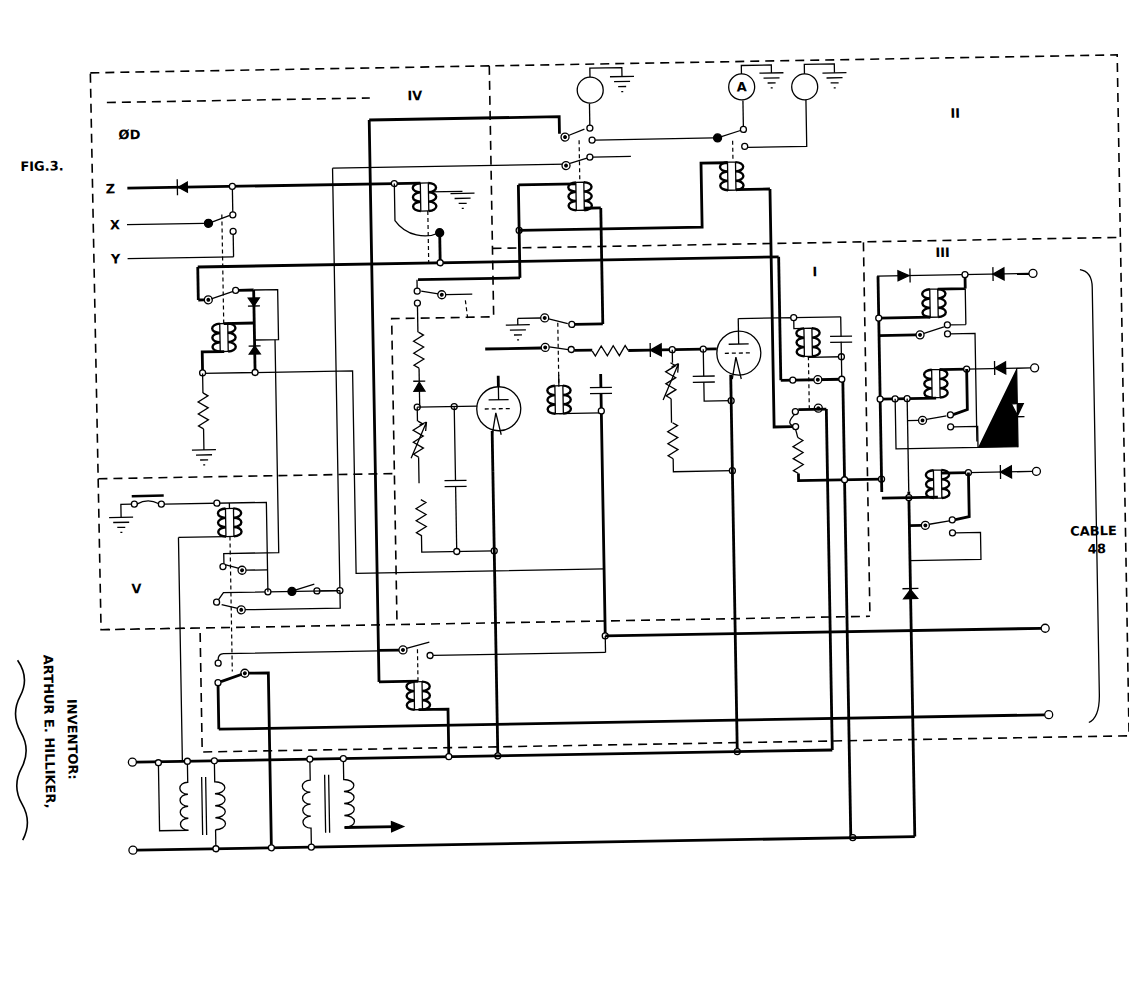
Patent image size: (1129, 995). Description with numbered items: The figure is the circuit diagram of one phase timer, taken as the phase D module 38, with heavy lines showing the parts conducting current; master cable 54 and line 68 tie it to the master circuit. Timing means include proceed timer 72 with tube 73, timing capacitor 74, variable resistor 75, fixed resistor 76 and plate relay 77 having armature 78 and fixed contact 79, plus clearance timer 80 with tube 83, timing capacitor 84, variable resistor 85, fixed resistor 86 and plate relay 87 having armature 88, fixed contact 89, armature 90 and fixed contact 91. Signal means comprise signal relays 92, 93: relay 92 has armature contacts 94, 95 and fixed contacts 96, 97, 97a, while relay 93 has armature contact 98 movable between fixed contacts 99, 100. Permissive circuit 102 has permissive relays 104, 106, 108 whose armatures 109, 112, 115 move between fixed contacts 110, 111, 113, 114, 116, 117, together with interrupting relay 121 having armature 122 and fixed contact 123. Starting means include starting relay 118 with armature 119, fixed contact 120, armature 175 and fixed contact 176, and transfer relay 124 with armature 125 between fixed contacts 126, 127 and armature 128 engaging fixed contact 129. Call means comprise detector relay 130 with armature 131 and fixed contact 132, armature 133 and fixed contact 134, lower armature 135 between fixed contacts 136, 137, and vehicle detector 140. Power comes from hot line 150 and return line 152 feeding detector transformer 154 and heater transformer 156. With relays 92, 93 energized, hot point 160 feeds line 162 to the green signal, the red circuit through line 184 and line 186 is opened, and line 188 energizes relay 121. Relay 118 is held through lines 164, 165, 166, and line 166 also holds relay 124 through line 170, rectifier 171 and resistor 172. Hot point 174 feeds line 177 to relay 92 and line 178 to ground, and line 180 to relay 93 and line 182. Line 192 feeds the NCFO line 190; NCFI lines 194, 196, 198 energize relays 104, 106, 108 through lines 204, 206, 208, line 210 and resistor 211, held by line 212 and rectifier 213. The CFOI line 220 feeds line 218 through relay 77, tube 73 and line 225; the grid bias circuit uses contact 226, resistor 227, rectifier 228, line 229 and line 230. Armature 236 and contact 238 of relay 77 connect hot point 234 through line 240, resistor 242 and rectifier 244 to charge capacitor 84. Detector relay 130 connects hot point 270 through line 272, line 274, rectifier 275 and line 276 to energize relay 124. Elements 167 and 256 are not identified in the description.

The phase D module 38 is at (238, 93).
The master cable 54 is at (160, 249).
The line 68 is at (165, 178).
The proceed timer 72 is at (530, 433).
The tube 73 is at (522, 418).
The timing capacitor 74 is at (462, 486).
The variable resistor 75 is at (421, 456).
The fixed resistor 76 is at (426, 520).
The plate relay 77 is at (566, 416).
The armature 78 is at (552, 313).
The fixed contact 79 is at (576, 328).
The clearance timer 80 is at (748, 400).
The tube 83 is at (722, 340).
The timing capacitor 84 is at (690, 388).
The variable resistor 85 is at (664, 386).
The fixed resistor 86 is at (665, 442).
The plate relay 87 is at (811, 330).
The armature 88 is at (812, 382).
The fixed contact 89 is at (794, 388).
The armature 90 is at (800, 420).
The fixed contact 91 is at (791, 434).
The signal relay 92 is at (597, 194).
The signal relay 93 is at (750, 179).
The armature contact 94 is at (571, 161).
The armature contact 95 is at (575, 128).
The fixed contact 96 is at (598, 160).
The fixed contact 97 is at (601, 140).
The fixed contact 97a is at (599, 126).
The armature contact 98 is at (726, 128).
The fixed contact 99 is at (754, 152).
The fixed contact 100 is at (753, 131).
The permissive circuit 102 is at (908, 264).
The permissive relay 104 is at (951, 311).
The permissive relay 106 is at (934, 376).
The permissive relay 108 is at (934, 478).
The armature 109 is at (918, 339).
The fixed contact 110 is at (960, 327).
The fixed contact 111 is at (960, 344).
The armature 112 is at (921, 444).
The fixed contact 113 is at (958, 420).
The fixed contact 114 is at (954, 437).
The armature 115 is at (922, 537).
The fixed contact 116 is at (958, 525).
The fixed contact 117 is at (951, 543).
The starting relay 118 is at (440, 186).
The armature 119 is at (438, 257).
The fixed contact 120 is at (420, 233).
The interrupting relay 121 is at (406, 700).
The armature 122 is at (412, 645).
The fixed contact 123 is at (430, 657).
The transfer relay 124 is at (214, 333).
The armature 125 is at (222, 214).
The fixed contact 126 is at (241, 209).
The fixed contact 127 is at (241, 226).
The armature 128 is at (210, 297).
The fixed contact 129 is at (238, 262).
The detector relay 130 is at (222, 522).
The armature 131 is at (234, 566).
The fixed contact 132 is at (216, 558).
The armature 133 is at (233, 606).
The fixed contact 134 is at (210, 596).
The lower armature 135 is at (244, 664).
The fixed contact 136 is at (293, 649).
The fixed contact 137 is at (219, 684).
The vehicle detector 140 is at (188, 544).
The hot line 150 is at (690, 840).
The common or return line 152 is at (766, 757).
The detector transformer 154 is at (214, 834).
The heater transformer 156 is at (318, 771).
The hot feed point 160 is at (473, 398).
The line 162 is at (611, 95).
The line 164 is at (840, 794).
The line 165 is at (819, 400).
The line 166 is at (703, 266).
The conductor 167 is at (397, 178).
The line 170 is at (258, 284).
The rectifier 171 is at (264, 296).
The fixed resistor 172 is at (198, 404).
The hot feed point 174 is at (477, 320).
The armature 175 is at (445, 297).
The upper fixed contact 176 is at (417, 286).
The line 177 is at (472, 291).
The line 178 is at (607, 285).
The line 180 is at (664, 226).
The line 182 is at (826, 535).
The line 184 is at (678, 137).
The line 186 is at (812, 131).
The line 188 is at (430, 160).
The no call feed-out line 190 is at (1014, 720).
The line 192 is at (211, 796).
The no call feed-in line 194 is at (1027, 278).
The no call feed-in line 196 is at (1033, 371).
The no call feed-in line 198 is at (1034, 475).
The line 204 is at (903, 320).
The line 206 is at (926, 411).
The line 208 is at (895, 510).
The line 210 is at (804, 488).
The resistor 211 is at (793, 466).
The line 212 is at (912, 668).
The rectifier 213 is at (914, 600).
The line 218 is at (605, 510).
The CFOI line 220 is at (1002, 632).
The line 225 is at (500, 598).
The contact 226 is at (416, 301).
The resistor 227 is at (427, 349).
The rectifier 228 is at (428, 378).
The line 229 is at (427, 389).
The line 230 is at (460, 430).
The hot feed point 234 is at (509, 354).
The armature 236 is at (530, 329).
The contact 238 is at (545, 355).
The line 240 is at (584, 353).
The resistor 242 is at (627, 345).
The rectifier 244 is at (660, 345).
The rectifier 256 is at (186, 170).
The hot feed point 270 is at (290, 562).
The line 272 is at (280, 409).
The line 274 is at (282, 330).
The rectifier 275 is at (270, 352).
The line 276 is at (200, 369).